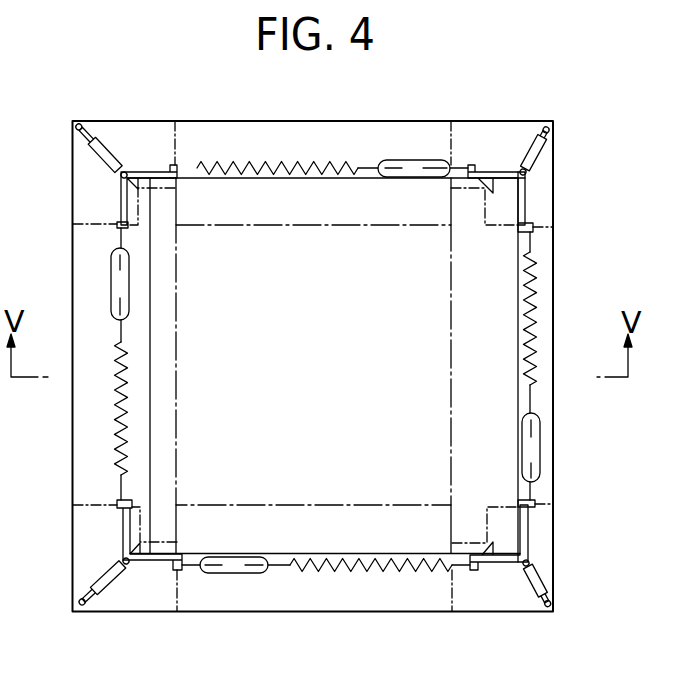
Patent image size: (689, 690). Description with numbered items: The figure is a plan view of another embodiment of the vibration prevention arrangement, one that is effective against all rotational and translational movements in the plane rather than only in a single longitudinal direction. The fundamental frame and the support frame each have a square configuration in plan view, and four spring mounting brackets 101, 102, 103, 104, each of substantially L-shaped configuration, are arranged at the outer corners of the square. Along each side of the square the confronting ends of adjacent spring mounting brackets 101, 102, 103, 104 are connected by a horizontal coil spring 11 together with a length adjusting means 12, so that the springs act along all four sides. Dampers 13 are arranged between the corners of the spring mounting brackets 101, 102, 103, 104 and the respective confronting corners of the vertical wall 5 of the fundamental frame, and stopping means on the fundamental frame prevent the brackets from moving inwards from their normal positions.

The vertical wall 5 is at (553, 345).
The horizontal coil spring 11 is at (289, 166).
The length adjusting means 12 is at (413, 160).
The damper 13 is at (100, 160).
The spring mounting bracket 101 is at (528, 528).
The spring mounting bracket 102 is at (500, 172).
The spring mounting bracket 103 is at (143, 172).
The spring mounting bracket 104 is at (123, 523).